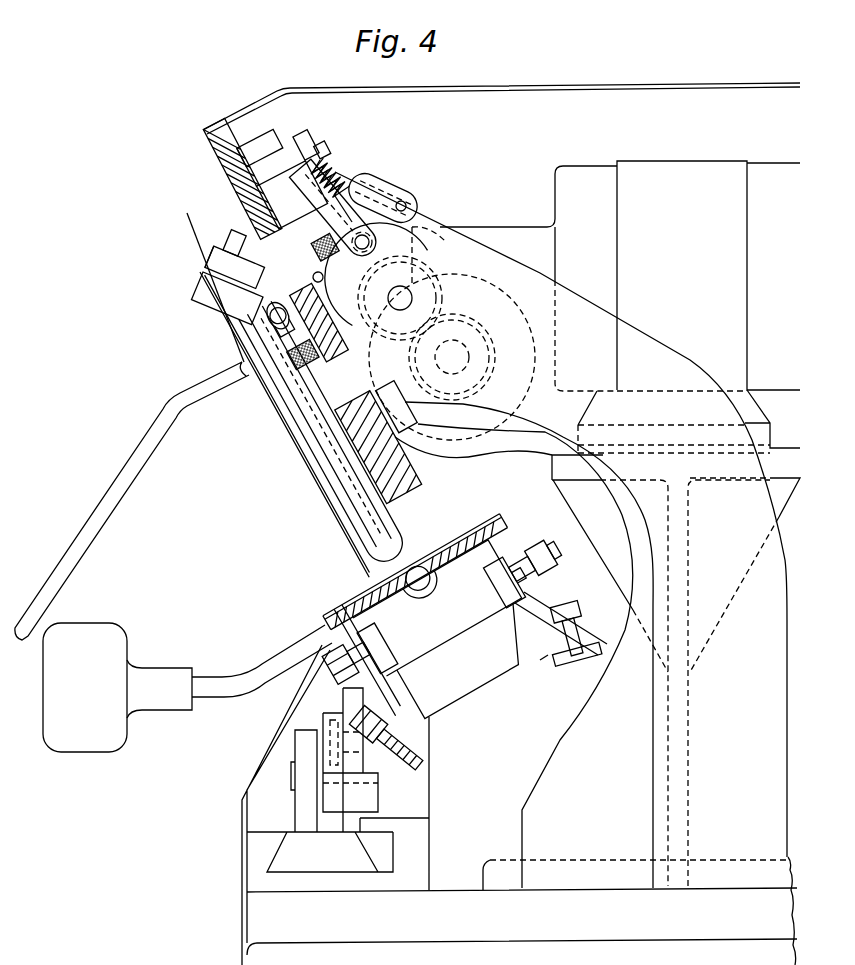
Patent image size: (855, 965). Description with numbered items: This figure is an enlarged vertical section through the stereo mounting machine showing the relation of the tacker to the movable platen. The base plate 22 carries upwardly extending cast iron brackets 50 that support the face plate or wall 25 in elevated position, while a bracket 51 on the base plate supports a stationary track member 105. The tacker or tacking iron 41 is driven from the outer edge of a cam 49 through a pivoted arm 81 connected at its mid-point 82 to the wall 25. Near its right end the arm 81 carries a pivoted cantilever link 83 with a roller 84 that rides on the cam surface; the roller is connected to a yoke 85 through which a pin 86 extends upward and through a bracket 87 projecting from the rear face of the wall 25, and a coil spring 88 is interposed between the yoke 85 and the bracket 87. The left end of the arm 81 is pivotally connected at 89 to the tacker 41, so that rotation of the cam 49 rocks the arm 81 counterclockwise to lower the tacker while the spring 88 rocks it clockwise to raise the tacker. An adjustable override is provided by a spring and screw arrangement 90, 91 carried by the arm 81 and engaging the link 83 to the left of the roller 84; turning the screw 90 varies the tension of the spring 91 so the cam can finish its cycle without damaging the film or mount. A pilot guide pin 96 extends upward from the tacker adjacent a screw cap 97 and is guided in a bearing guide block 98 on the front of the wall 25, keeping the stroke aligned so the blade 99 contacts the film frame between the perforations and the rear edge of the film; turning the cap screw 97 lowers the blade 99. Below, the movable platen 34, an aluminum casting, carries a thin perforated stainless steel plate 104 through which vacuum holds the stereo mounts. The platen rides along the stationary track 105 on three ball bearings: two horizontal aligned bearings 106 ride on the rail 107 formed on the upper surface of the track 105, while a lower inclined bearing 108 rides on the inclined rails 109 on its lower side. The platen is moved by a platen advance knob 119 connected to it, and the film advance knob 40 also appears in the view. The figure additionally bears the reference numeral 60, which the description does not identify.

The base plate 22 is at (640, 924).
The face plate or wall 25 is at (222, 180).
The movable platen 34 is at (503, 538).
The film advance knob 40 is at (111, 513).
The tacker 41 is at (282, 410).
The cam 49 is at (440, 227).
The cast iron brackets 50 is at (750, 696).
The bracket 51 is at (484, 764).
The block 60 is at (688, 260).
The pivoted arm 81 is at (395, 187).
The mid-point pivot 82 is at (265, 314).
The cantilever link 83 is at (406, 203).
The roller 84 is at (410, 217).
The yoke 85 is at (346, 190).
The pin 86 is at (306, 142).
The bracket 87 is at (330, 152).
The coil spring 88 is at (330, 168).
The pivotal connection 89 is at (268, 322).
The screw 90 is at (338, 200).
The spring 91 is at (354, 243).
The pilot guide pin 96 is at (258, 274).
The screw cap 97 is at (267, 378).
The bearing guide block 98 is at (226, 248).
The blade 99 is at (416, 558).
The stainless steel plate 104 is at (320, 612).
The stationary track member 105 is at (476, 684).
The horizontal aligned bearings 106 is at (375, 635).
The rail 107 is at (505, 611).
The lower inclined bearing 108 is at (588, 662).
The inclined rails 109 is at (540, 660).
The platen advance knob 119 is at (96, 711).